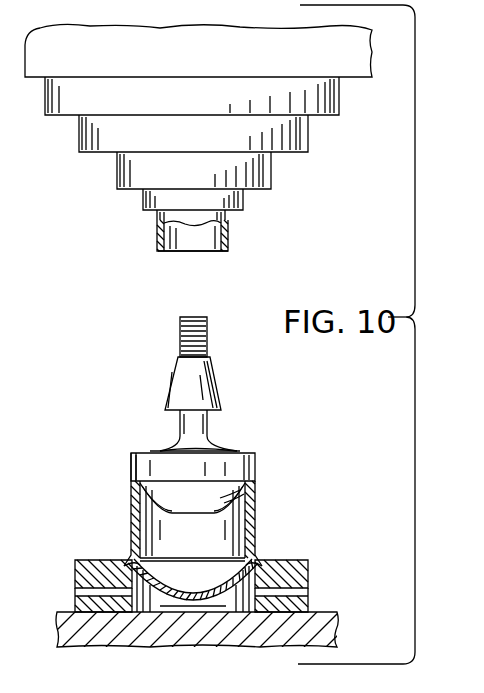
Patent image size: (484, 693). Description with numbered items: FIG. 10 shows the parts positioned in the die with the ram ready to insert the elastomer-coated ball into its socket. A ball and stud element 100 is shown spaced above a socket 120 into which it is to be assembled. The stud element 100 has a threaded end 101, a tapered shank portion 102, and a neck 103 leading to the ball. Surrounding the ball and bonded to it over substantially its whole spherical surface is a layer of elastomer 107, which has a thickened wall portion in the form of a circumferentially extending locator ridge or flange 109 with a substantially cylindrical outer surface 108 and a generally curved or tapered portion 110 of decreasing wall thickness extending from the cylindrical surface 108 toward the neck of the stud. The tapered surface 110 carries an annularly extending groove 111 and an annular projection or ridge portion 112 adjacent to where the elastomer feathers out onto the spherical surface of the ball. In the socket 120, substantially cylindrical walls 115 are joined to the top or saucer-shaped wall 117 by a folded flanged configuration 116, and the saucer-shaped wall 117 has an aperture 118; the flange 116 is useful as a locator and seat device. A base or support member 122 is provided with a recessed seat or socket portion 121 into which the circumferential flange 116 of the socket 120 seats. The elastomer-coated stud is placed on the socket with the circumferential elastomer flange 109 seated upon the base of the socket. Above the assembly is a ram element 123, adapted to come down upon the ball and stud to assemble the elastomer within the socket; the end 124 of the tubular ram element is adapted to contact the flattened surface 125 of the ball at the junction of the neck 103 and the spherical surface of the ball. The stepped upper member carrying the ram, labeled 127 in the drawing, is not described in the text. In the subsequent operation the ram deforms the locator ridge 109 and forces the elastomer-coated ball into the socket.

The ball and stud element 100 is at (196, 384).
The threaded end 101 is at (208, 333).
The tapered shank portion 102 is at (218, 381).
The neck 103 is at (178, 431).
The layer of elastomer 107 is at (258, 466).
The cylindrical outer surface 108 is at (130, 470).
The locator ridge or flange 109 is at (248, 492).
The tapered portion 110 is at (158, 449).
The annular groove 111 is at (243, 453).
The annular projection or ridge portion 112 is at (236, 453).
The cylindrical walls 115 is at (132, 516).
The folded flanged configuration 116 is at (252, 561).
The saucer-shaped wall 117 is at (176, 593).
The aperture 118 is at (197, 596).
The socket 120 is at (257, 526).
The recessed seat or socket portion 121 is at (265, 563).
The base or support member 122 is at (309, 580).
The ram element 123 is at (156, 229).
The end of the tubular ram element 124 is at (227, 252).
The flattened surface 125 is at (246, 440).
The stepped plunger 127 is at (246, 203).